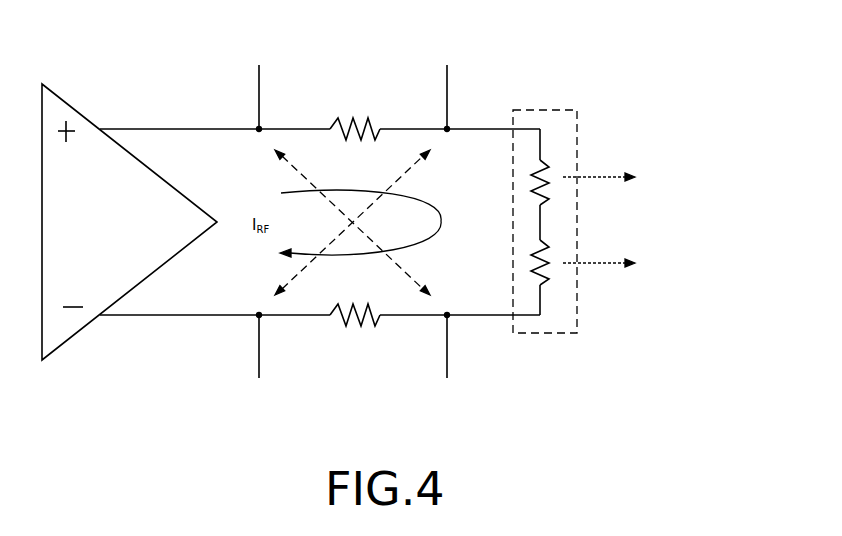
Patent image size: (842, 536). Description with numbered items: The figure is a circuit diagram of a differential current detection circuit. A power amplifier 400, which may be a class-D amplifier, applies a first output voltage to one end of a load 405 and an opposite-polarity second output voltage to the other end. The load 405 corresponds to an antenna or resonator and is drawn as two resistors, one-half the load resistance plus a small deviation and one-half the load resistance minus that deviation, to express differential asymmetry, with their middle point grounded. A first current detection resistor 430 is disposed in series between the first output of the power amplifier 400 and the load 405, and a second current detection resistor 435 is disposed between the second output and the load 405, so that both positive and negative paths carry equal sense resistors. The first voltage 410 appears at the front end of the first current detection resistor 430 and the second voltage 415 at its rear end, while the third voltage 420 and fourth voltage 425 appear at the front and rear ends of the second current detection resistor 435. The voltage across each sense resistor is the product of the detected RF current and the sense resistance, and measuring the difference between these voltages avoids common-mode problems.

The power amplifier 400 is at (63, 100).
The load 405 is at (547, 110).
The first voltage V1 410 is at (258, 127).
The second voltage V2 415 is at (449, 127).
The third voltage V3 420 is at (258, 317).
The fourth voltage V4 425 is at (449, 317).
The first current detection resistor 430 is at (354, 141).
The second current detection resistor 435 is at (361, 305).